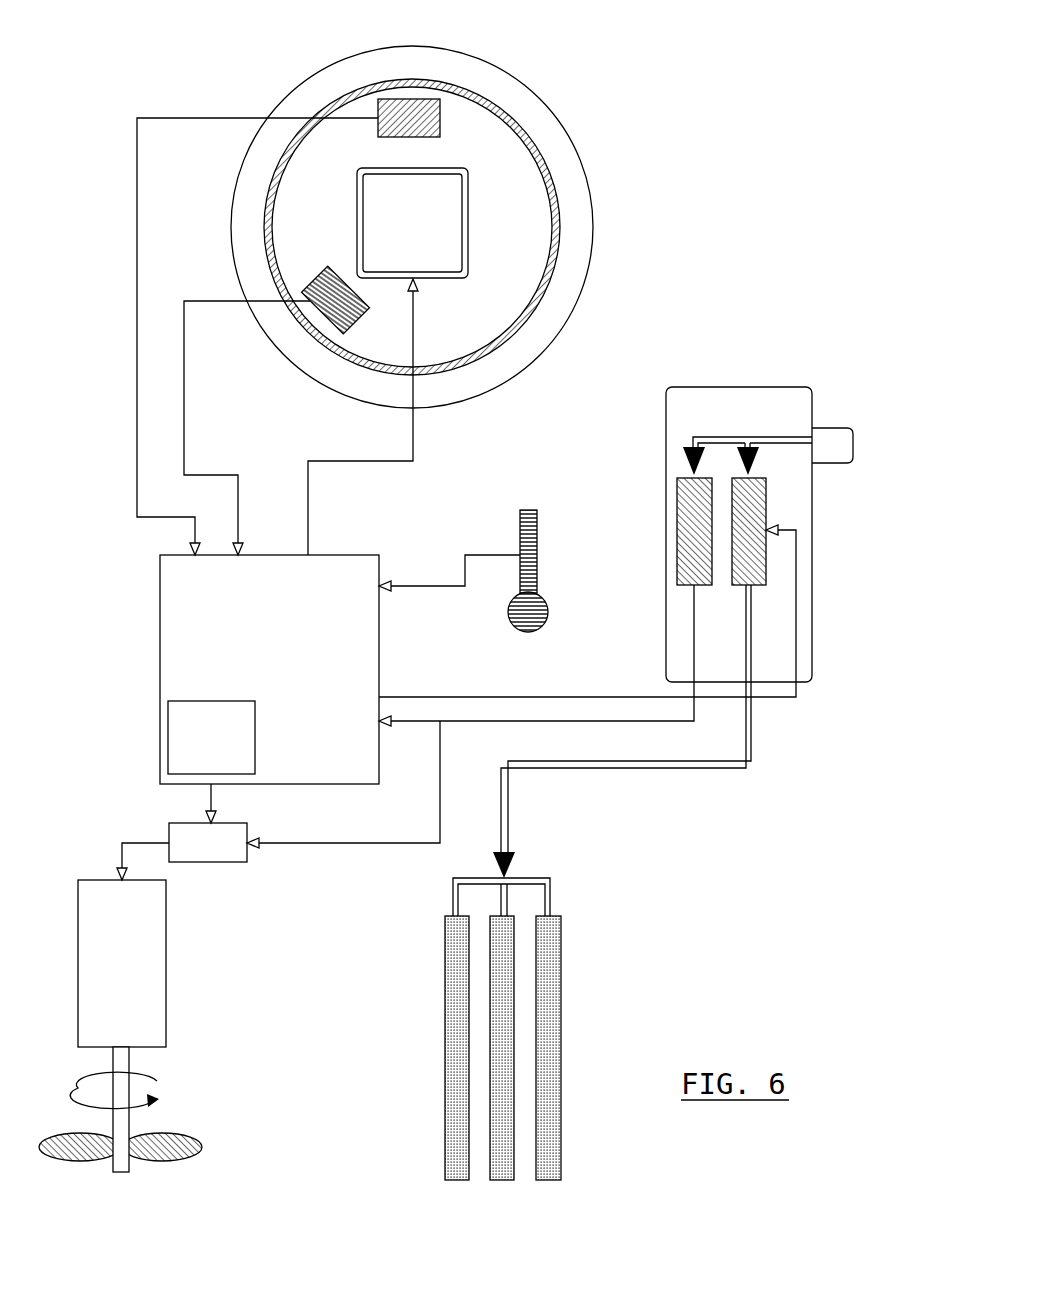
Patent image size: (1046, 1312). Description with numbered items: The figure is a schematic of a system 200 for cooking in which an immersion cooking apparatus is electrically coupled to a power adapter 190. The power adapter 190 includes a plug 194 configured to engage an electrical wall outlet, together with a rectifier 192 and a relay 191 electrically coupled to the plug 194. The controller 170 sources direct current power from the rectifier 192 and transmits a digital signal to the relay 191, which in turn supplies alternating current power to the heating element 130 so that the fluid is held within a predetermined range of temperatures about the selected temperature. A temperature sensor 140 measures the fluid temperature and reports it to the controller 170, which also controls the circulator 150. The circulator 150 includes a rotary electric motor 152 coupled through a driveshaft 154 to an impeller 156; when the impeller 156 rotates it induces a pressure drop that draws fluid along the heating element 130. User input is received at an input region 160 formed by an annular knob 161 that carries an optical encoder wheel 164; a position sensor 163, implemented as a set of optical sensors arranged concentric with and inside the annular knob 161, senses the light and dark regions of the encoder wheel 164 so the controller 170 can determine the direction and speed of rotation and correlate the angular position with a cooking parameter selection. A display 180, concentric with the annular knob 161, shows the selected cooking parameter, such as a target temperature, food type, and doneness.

The system for cooking 200 is at (150, 70).
The input region 160 is at (590, 244).
The annular knob 161 is at (540, 127).
The encoder wheel 164 is at (440, 102).
The position sensor 163 is at (378, 108).
The display 180 is at (447, 187).
The controller 170 is at (172, 645).
The temperature sensor 140 is at (548, 606).
The power adapter 190 is at (731, 405).
The plug 194 is at (820, 452).
The relay 191 is at (745, 555).
The rectifier 192 is at (712, 585).
The heating element 130 is at (556, 941).
The circulator 150 is at (259, 983).
The rotary electric motor 152 is at (153, 943).
The driveshaft 154 is at (122, 1063).
The impeller 156 is at (196, 1142).